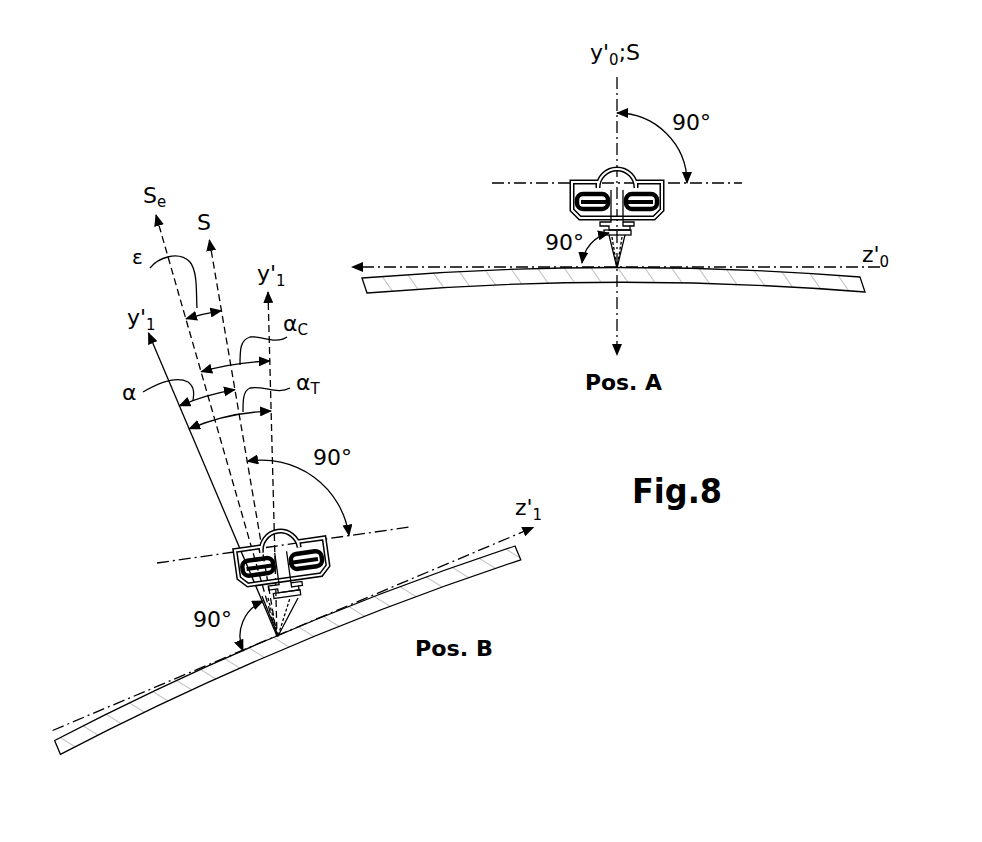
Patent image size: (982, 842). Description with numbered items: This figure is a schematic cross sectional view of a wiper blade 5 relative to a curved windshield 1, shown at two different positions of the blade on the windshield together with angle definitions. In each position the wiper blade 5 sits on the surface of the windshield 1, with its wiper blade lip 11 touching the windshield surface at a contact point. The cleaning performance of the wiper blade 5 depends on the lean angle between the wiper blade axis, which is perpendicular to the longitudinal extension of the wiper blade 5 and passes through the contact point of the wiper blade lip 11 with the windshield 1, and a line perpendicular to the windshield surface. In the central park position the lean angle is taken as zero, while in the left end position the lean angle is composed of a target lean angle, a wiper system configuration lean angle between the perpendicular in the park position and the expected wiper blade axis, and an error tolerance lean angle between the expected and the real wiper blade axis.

The windshield 1 is at (405, 283).
The wiper blade 5 is at (623, 212).
The wiper blade lip 11 is at (617, 237).